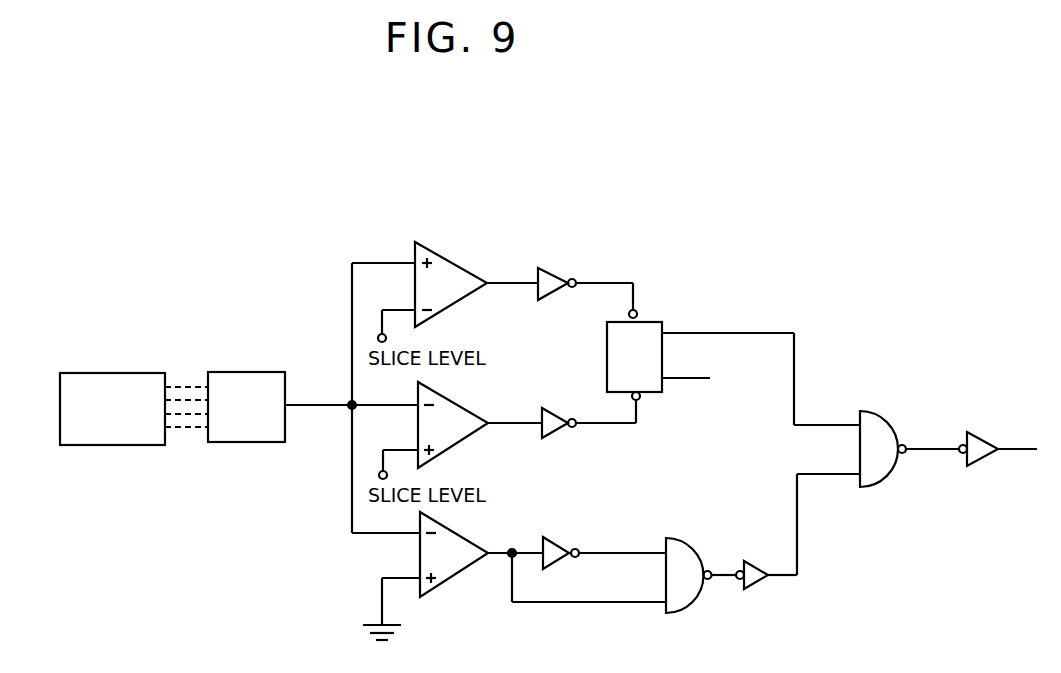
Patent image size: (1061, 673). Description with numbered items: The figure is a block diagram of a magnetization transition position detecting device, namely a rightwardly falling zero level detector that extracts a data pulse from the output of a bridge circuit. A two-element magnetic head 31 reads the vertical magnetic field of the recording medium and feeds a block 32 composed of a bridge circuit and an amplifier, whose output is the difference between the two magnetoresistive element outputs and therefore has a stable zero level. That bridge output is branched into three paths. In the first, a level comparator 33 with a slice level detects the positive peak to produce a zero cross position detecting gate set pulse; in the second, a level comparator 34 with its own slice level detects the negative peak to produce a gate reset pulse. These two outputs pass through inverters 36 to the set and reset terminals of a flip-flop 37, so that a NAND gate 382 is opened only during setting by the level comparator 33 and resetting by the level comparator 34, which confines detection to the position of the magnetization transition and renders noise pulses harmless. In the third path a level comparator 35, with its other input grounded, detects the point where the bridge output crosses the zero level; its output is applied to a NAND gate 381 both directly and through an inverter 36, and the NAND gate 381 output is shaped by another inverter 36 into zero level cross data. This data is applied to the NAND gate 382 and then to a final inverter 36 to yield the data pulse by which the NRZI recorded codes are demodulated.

The two-element magnetic head 31 is at (97, 373).
The bridge-amplifier block 32 is at (232, 372).
The level comparator 33 is at (456, 262).
The level comparator 34 is at (462, 405).
The level comparator 35 is at (476, 541).
The inverter 36 is at (556, 270).
The flip-flop 37 is at (652, 321).
The NAND gate 381 is at (694, 551).
The NAND gate 382 is at (884, 414).